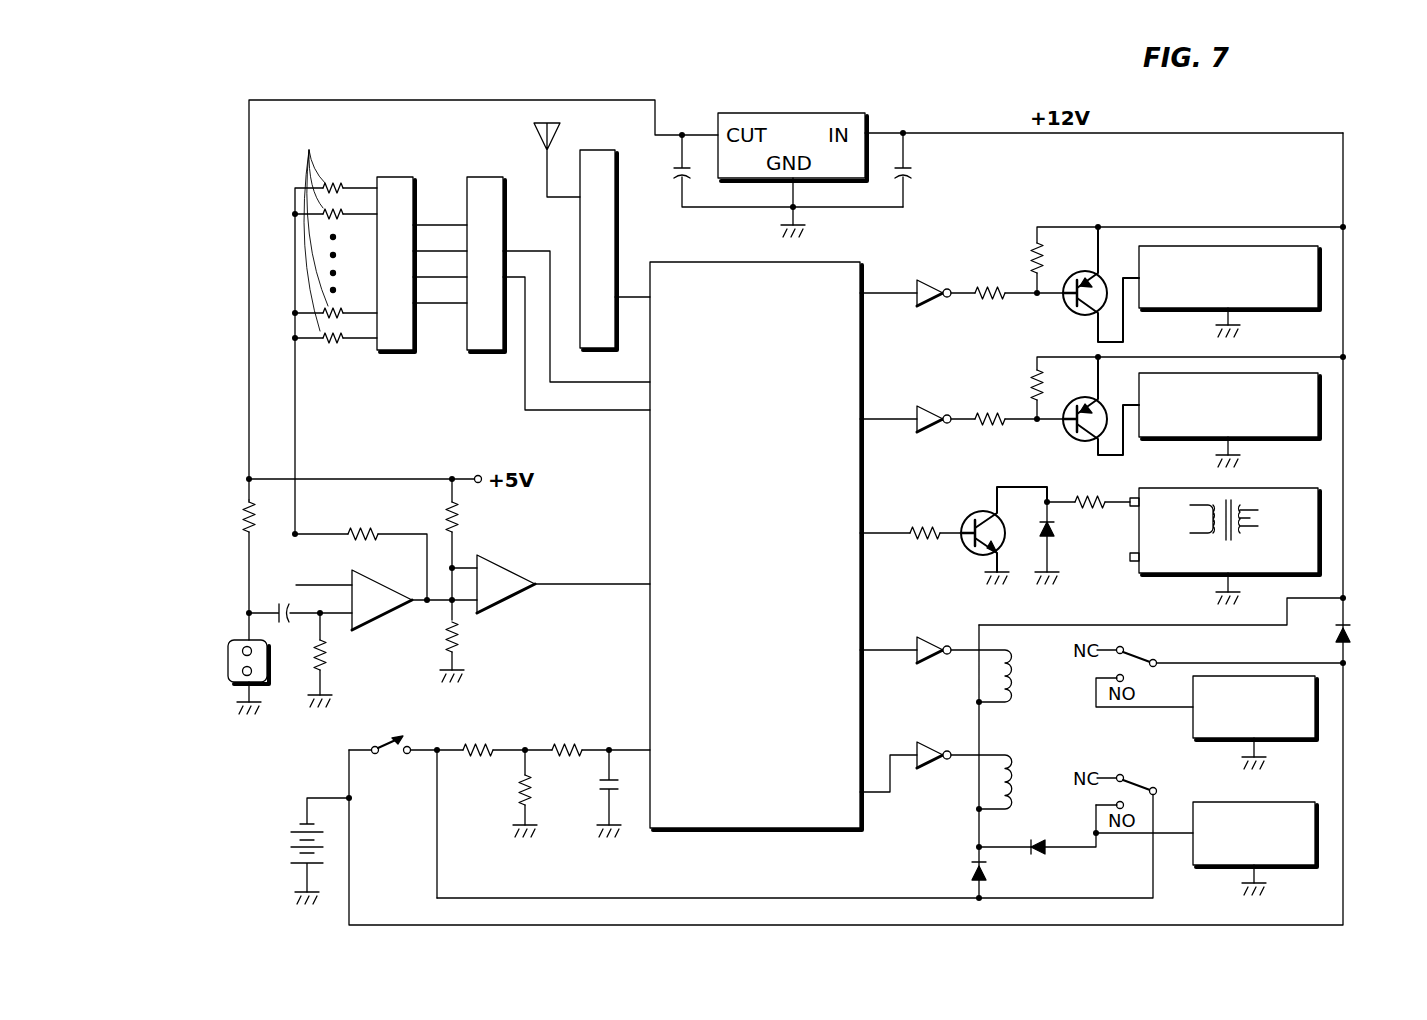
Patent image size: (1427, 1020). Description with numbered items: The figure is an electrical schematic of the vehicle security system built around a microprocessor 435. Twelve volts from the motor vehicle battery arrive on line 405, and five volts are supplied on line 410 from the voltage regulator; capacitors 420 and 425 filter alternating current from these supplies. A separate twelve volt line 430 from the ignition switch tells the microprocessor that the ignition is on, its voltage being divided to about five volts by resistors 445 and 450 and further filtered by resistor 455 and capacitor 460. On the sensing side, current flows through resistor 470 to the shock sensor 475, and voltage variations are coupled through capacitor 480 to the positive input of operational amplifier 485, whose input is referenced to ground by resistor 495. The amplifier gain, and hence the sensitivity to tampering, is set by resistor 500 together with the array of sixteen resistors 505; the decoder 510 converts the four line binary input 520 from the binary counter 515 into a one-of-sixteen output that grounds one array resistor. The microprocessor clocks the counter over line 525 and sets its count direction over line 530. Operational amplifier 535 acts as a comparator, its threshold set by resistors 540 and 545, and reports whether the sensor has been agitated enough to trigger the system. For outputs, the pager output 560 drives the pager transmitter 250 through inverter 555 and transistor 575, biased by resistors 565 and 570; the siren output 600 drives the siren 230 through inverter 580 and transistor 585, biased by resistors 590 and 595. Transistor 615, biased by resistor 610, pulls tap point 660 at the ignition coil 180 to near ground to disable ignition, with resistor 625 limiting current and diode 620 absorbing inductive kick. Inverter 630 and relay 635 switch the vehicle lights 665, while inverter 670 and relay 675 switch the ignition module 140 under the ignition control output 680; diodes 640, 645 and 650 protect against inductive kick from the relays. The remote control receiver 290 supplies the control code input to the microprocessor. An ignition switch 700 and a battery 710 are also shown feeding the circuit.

The ignition module 140 is at (1208, 802).
The ignition coil 180 is at (1185, 575).
The siren 230 is at (1255, 437).
The pager transmitter 250 is at (1255, 308).
The remote control receiver 290 is at (586, 150).
The line 405 is at (1345, 425).
The line 410 is at (385, 100).
The capacitor 420 is at (771, 171).
The capacitor 425 is at (915, 172).
The line 430 is at (530, 898).
The microprocessor 435 is at (728, 262).
The resistor 445 is at (475, 744).
The resistor 450 is at (518, 790).
The resistor 455 is at (567, 744).
The capacitor 460 is at (600, 788).
The resistor 470 is at (240, 522).
The shock sensor 475 is at (235, 640).
The capacitor 480 is at (280, 604).
The operational amplifier 485 is at (392, 590).
The resistor 495 is at (328, 655).
The resistor 500 is at (362, 528).
The array of resistors 505 is at (334, 331).
The decoder 510 is at (390, 177).
The binary counter 515 is at (490, 177).
The four line binary input 520 is at (447, 210).
The control line 525 is at (565, 382).
The control line 530 is at (596, 410).
The operational amplifier 535 is at (508, 565).
The resistor 540 is at (460, 637).
The resistor 545 is at (460, 518).
The inverter 555 is at (930, 280).
The pager output 560 is at (885, 298).
The resistor 565 is at (983, 285).
The resistor 570 is at (1030, 252).
The transistor 575 is at (1080, 280).
The inverter 580 is at (930, 406).
The transistor 585 is at (1080, 406).
The resistor 590 is at (983, 411).
The resistor 595 is at (1030, 380).
The siren output 600 is at (885, 424).
The resistor 610 is at (918, 527).
The transistor 615 is at (975, 515).
The diode 620 is at (1056, 530).
The resistor 625 is at (1095, 496).
The inverter 630 is at (935, 640).
The relay 635 is at (1015, 675).
The diode 640 is at (1335, 633).
The diode 645 is at (1037, 855).
The diode 650 is at (972, 875).
The tap point 660 is at (1116, 498).
The vehicle lights 665 is at (1193, 732).
The inverter 670 is at (935, 745).
The relay 675 is at (1015, 782).
The ignition control output 680 is at (900, 755).
The ignition switch 700 is at (393, 742).
The battery 710 is at (282, 840).